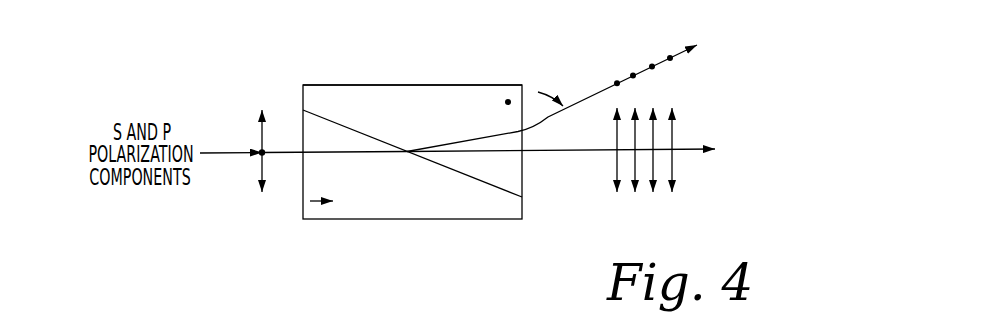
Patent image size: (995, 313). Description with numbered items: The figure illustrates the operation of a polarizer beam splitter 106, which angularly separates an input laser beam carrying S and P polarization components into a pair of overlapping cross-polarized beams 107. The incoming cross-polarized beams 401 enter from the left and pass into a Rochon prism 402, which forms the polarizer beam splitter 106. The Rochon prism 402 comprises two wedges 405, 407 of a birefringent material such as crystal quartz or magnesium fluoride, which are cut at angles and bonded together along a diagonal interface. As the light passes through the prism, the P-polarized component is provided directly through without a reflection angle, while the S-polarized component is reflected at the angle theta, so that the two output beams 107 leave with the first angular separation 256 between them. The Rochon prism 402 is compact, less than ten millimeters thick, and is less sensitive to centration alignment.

The cross-polarized beams 401 is at (228, 152).
The Rochon prism 402 is at (374, 84).
The wedge 405 is at (437, 121).
The wedge 407 is at (437, 200).
The first angular separation 256 is at (582, 156).
The polarizer beam splitter 106 is at (409, 235).
The pair of overlapping cross-polarized beams 107 is at (735, 40).